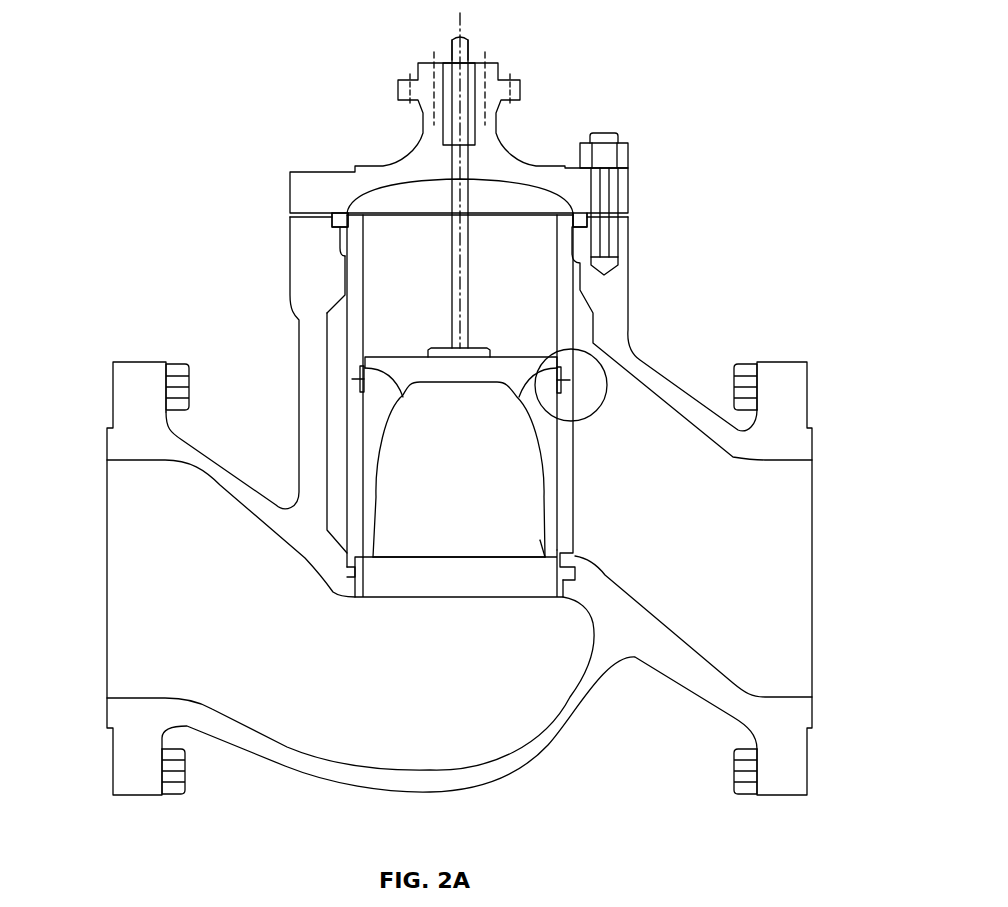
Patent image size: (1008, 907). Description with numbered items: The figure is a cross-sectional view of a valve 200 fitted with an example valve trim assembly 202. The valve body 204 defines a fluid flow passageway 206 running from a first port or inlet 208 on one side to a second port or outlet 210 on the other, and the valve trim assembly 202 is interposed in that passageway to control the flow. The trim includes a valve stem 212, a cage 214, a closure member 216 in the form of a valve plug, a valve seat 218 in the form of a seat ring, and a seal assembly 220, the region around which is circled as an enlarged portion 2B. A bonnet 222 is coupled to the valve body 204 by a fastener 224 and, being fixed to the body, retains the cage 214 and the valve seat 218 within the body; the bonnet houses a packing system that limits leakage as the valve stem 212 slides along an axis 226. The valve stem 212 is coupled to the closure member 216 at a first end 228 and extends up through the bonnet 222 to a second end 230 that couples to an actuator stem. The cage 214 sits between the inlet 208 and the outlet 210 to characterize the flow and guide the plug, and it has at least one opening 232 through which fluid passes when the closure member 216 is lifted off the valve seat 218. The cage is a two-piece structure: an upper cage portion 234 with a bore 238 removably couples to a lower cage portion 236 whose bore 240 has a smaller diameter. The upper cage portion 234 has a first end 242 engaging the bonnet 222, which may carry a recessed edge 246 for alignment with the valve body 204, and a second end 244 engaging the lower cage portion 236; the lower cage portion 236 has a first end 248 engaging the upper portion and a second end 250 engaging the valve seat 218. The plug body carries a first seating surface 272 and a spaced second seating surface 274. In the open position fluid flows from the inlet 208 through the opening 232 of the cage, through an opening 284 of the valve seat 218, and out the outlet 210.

The valve 200 is at (750, 60).
The valve trim assembly 202 is at (536, 268).
The valve body 204 is at (577, 730).
The fluid flow passageway 206 is at (467, 681).
The inlet 208 is at (107, 585).
The outlet 210 is at (813, 560).
The valve stem 212 is at (452, 299).
The cage 214 is at (336, 330).
The closure member 216 is at (388, 432).
The valve seat 218 is at (557, 570).
The seal assembly 220 is at (551, 350).
The bonnet 222 is at (326, 171).
The fastener 224 is at (607, 133).
The axis 226 is at (470, 53).
The first end 228 is at (452, 340).
The second end 230 is at (448, 47).
The opening 232 is at (563, 465).
The upper cage portion 234 is at (352, 284).
The lower cage portion 236 is at (347, 461).
The bore 238 is at (557, 308).
The bore 240 is at (540, 492).
The first end 242 is at (347, 248).
The second end 244 is at (353, 373).
The recessed edge 246 is at (346, 228).
The first end 248 is at (352, 397).
The second end 250 is at (345, 556).
The first seating surface 272 is at (546, 550).
The second seating surface 274 is at (401, 386).
The opening 284 is at (440, 548).
The enlarged portion 2B is at (607, 378).